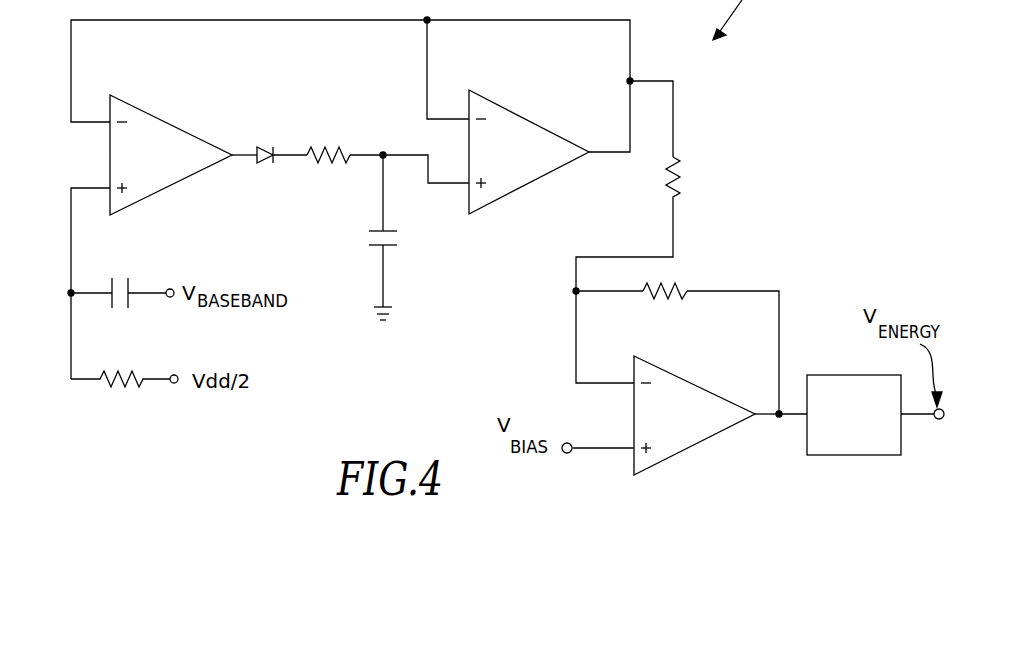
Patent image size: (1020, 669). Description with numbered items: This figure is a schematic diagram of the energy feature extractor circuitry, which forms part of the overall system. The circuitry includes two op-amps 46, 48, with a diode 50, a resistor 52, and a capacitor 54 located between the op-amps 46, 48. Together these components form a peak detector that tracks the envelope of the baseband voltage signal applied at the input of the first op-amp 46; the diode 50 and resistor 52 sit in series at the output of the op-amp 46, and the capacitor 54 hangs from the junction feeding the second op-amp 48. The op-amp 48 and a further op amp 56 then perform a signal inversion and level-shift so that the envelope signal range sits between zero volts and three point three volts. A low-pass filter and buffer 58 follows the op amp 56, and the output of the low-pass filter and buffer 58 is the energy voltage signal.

The op-amp 46 is at (150, 115).
The op-amp 48 is at (515, 113).
The diode 50 is at (264, 164).
The resistor 52 is at (325, 147).
The capacitor 54 is at (397, 236).
The op amp 56 is at (700, 440).
The low-pass filter and buffer 58 is at (851, 457).